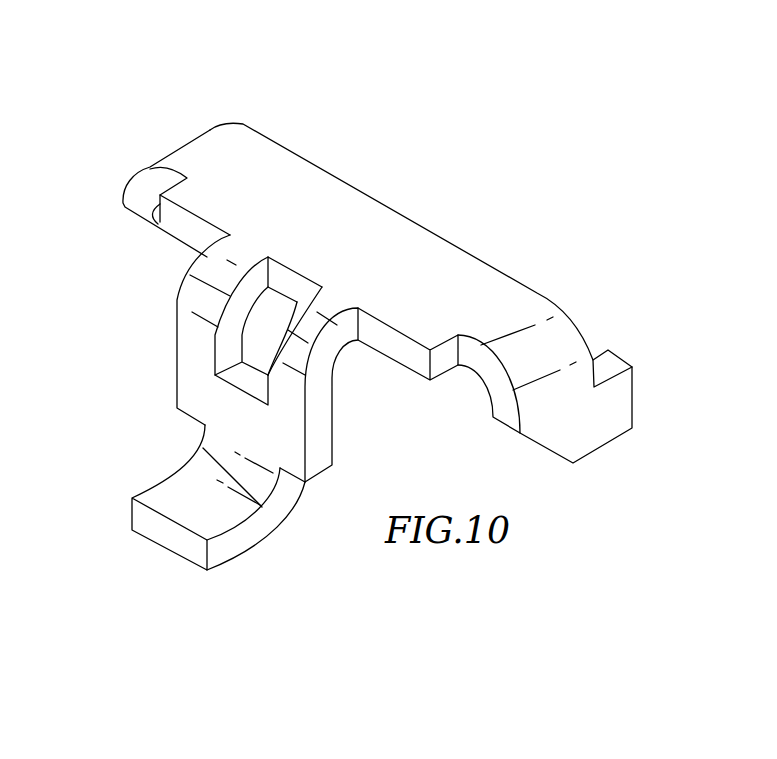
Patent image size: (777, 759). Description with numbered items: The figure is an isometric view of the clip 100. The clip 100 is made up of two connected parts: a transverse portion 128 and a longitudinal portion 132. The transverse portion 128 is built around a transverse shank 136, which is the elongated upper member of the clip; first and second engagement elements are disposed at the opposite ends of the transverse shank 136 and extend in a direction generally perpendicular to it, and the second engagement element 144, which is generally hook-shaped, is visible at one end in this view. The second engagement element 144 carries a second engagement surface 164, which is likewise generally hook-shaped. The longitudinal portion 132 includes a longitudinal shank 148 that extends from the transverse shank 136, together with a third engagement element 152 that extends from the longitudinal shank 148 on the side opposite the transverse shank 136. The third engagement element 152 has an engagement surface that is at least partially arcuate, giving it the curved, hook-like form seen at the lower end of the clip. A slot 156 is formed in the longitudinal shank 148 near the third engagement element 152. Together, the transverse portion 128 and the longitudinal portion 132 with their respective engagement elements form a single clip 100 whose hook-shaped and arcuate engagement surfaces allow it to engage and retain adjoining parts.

The clip 100 is at (267, 130).
The transverse portion 128 is at (332, 197).
The longitudinal portion 132 is at (172, 336).
The transverse shank 136 is at (440, 263).
The second engagement element 144 is at (633, 387).
The longitudinal shank 148 is at (333, 407).
The third engagement element 152 is at (228, 545).
The slot 156 is at (238, 300).
The second engagement surface 164 is at (605, 365).